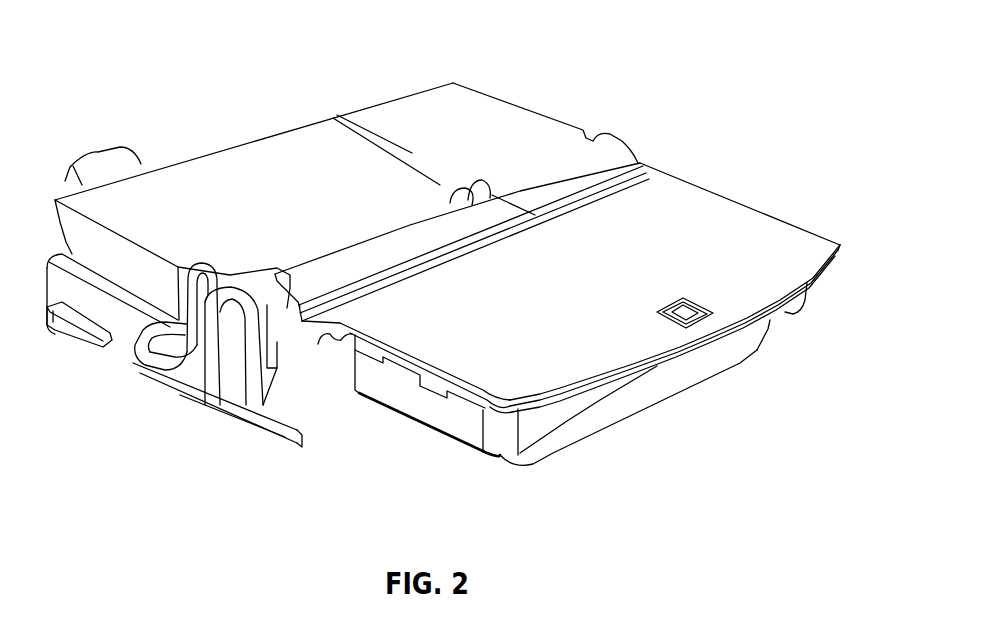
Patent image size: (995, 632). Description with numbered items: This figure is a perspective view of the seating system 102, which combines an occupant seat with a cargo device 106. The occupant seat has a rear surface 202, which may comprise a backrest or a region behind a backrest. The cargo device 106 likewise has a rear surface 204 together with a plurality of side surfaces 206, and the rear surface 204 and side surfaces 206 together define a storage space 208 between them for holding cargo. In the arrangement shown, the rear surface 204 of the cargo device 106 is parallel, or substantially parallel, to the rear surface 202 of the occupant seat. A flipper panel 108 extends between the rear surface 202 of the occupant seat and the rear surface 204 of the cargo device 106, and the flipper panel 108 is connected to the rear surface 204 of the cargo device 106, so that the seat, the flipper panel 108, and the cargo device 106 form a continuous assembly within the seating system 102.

The seating system 102 is at (744, 37).
The rear surface of the occupant seat 202 is at (268, 138).
The flipper panel 108 is at (641, 160).
The rear surface of the cargo device 204 is at (742, 207).
The cargo device 106 is at (808, 226).
The side surfaces 206 is at (482, 454).
The storage space 208 is at (352, 379).